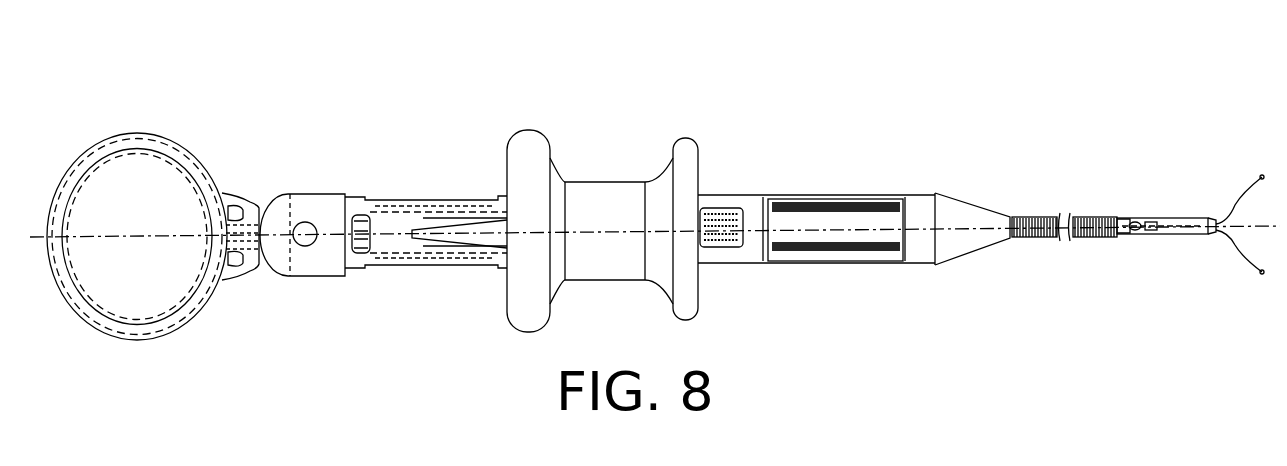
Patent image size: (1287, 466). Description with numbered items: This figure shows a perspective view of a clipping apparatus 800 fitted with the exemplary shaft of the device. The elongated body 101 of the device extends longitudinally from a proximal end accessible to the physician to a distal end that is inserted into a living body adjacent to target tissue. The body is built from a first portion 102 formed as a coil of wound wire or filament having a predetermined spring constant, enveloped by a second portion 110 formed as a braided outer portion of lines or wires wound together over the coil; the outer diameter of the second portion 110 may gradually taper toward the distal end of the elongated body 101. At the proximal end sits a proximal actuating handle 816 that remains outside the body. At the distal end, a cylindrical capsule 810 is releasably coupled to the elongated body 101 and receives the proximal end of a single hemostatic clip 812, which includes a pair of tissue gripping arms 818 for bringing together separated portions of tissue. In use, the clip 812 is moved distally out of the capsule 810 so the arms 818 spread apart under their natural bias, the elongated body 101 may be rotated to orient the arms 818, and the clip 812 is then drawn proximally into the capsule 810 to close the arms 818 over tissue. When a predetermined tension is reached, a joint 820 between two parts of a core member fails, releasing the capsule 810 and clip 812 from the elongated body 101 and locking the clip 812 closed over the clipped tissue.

The clipping apparatus 800 is at (400, 114).
The proximal actuating handle 816 is at (147, 145).
The second portion 110 is at (1027, 217).
The first portion 102 is at (1043, 220).
The elongated body 101 is at (1098, 238).
The joint between two parts of core member 820 is at (1126, 233).
The cylindrical capsule 810 is at (1171, 220).
The hemostatic clip 812 is at (1225, 238).
The tissue gripping arms 818 is at (1258, 175).